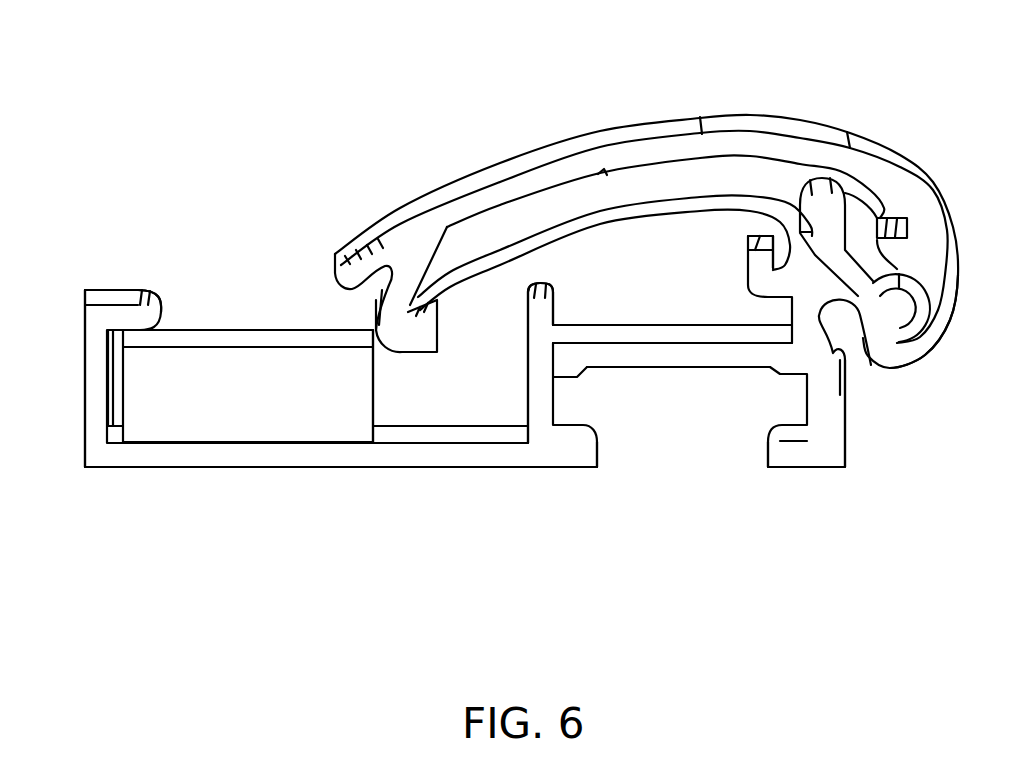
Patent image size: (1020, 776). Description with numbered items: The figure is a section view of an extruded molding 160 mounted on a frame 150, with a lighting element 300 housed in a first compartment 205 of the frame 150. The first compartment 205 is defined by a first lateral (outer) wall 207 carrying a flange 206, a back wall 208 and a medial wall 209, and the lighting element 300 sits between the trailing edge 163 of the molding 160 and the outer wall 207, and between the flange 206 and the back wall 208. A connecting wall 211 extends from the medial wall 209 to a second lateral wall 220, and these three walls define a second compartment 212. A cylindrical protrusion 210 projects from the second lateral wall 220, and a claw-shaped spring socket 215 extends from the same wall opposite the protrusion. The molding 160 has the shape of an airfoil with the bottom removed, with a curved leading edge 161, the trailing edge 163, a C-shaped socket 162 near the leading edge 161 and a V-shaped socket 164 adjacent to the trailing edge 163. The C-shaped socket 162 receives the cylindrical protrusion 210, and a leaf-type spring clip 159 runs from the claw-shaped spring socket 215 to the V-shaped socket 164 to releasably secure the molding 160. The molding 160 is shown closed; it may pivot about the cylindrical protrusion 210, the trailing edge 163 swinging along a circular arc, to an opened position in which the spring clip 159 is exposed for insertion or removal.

The frame 150 is at (597, 470).
The spring clip 159 is at (606, 213).
The molding 160 is at (710, 118).
The leading edge 161 is at (955, 325).
The C-shaped socket 162 is at (882, 232).
The trailing edge 163 is at (335, 272).
The V-shaped socket 164 is at (440, 297).
The first compartment 205 is at (428, 412).
The flange 206 is at (128, 302).
The first lateral (outer) wall 207 is at (78, 372).
The back wall 208 is at (233, 468).
The medial wall 209 is at (527, 383).
The cylindrical protrusion 210 is at (887, 313).
The connecting wall 211 is at (715, 358).
The second compartment 212 is at (650, 397).
The claw-shaped spring socket 215 is at (770, 258).
The second lateral wall 220 is at (830, 420).
The lighting element 300 is at (213, 395).